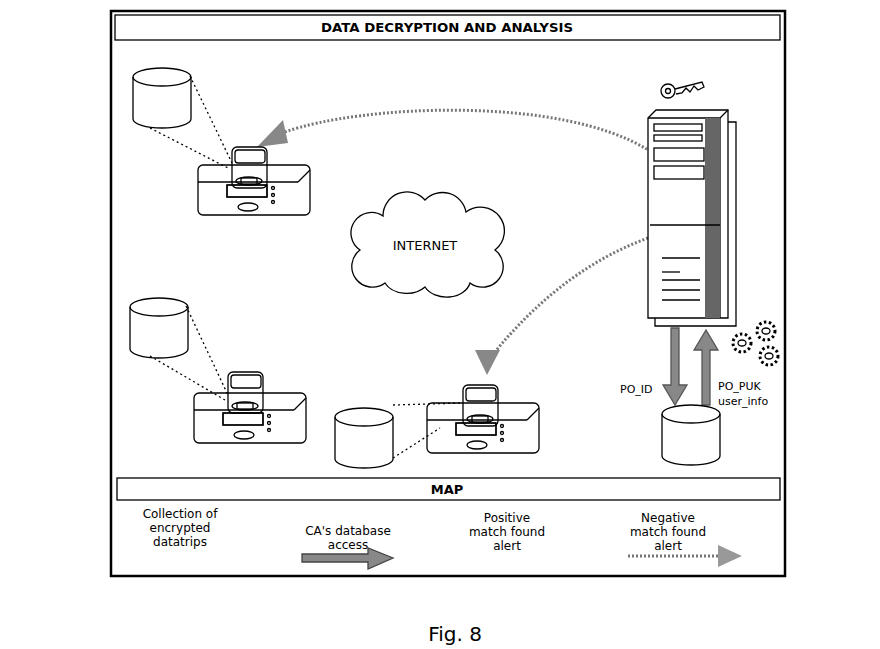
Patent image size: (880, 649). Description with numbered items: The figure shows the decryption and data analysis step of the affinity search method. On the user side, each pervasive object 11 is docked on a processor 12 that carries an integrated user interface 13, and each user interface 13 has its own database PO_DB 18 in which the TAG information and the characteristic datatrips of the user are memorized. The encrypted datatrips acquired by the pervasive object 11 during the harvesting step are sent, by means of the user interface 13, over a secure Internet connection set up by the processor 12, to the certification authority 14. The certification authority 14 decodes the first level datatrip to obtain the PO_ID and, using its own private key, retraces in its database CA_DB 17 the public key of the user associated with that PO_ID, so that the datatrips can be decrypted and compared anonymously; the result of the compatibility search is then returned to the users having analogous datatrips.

The pervasive object 11 is at (263, 173).
The processor 12 is at (210, 204).
The user interface 13 is at (232, 190).
The certification authority 14 is at (697, 240).
The CA database 17 is at (703, 435).
The PO database 18 is at (152, 118).